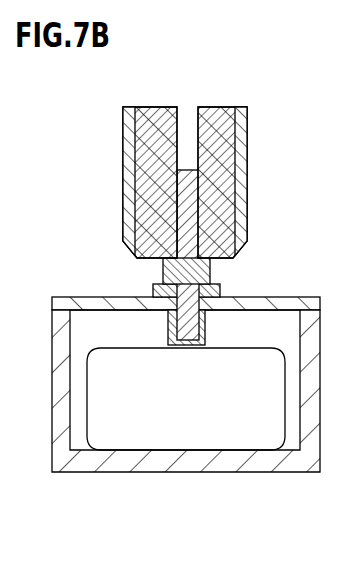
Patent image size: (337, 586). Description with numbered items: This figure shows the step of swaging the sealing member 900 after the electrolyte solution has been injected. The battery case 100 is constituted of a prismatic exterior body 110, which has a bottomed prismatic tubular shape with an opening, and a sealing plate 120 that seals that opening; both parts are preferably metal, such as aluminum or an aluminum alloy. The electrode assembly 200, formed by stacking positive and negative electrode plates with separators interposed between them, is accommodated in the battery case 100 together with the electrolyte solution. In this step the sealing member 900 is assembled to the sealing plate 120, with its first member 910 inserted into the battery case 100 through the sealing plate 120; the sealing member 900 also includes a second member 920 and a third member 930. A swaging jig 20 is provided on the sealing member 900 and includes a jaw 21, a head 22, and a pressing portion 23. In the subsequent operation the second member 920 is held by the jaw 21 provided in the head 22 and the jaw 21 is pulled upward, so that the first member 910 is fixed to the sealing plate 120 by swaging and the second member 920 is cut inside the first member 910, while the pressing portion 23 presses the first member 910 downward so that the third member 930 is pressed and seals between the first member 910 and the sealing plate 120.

The swaging jig 20 is at (227, 195).
The jaw 21 is at (228, 197).
The head 22 is at (238, 223).
The pressing portion 23 is at (210, 268).
The battery case 100 is at (172, 344).
The prismatic exterior body 110 is at (113, 246).
The sealing plate 120 is at (93, 297).
The electrode assembly 200 is at (247, 430).
The sealing member 900 is at (146, 358).
The first member 910 is at (176, 312).
The second member 920 is at (183, 340).
The third member 930 is at (153, 290).